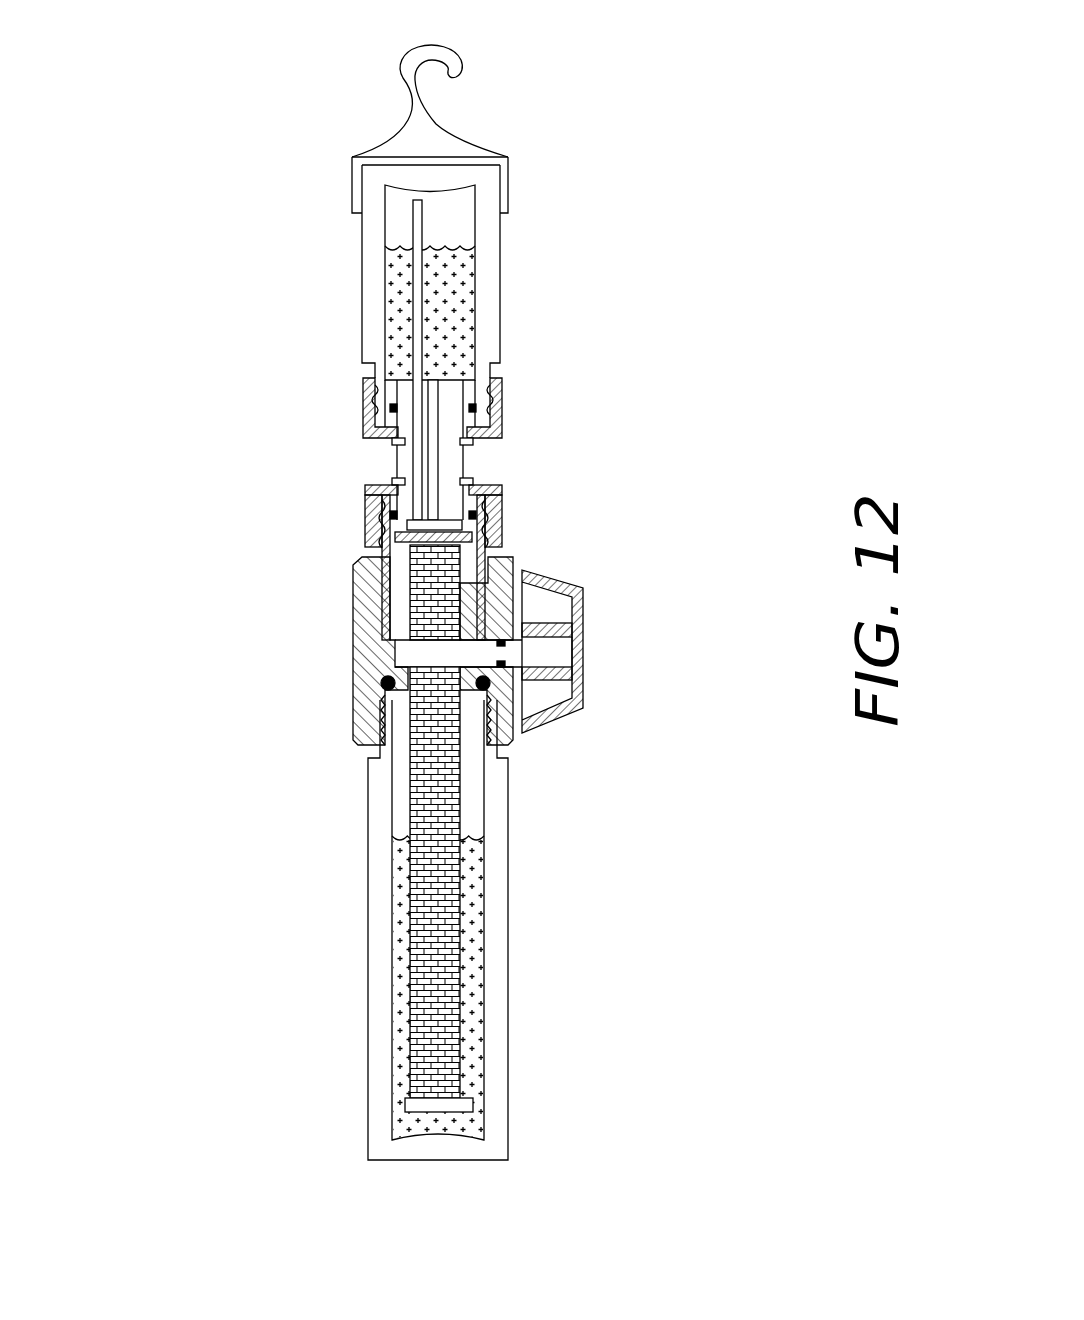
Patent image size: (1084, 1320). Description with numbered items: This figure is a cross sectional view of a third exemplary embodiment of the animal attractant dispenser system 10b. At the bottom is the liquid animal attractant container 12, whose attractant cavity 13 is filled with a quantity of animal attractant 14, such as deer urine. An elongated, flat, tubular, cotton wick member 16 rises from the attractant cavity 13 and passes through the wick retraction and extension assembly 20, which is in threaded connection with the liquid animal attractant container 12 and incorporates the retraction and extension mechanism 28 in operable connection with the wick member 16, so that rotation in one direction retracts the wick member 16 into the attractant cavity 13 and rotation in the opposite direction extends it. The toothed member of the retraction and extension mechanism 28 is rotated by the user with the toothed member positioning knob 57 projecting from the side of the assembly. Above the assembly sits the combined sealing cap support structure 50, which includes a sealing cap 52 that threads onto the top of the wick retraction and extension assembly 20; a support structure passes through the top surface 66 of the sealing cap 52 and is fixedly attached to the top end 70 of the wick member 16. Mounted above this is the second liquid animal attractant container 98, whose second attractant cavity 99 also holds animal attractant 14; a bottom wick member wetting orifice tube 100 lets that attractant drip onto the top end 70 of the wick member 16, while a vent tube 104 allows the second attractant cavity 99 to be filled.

The animal attractant dispenser system 10b is at (150, 606).
The liquid animal attractant container 12 is at (368, 895).
The attractant cavity 13 is at (397, 815).
The animal attractant 14 is at (460, 288).
The wick member 16 is at (412, 902).
The wick retraction and extension assembly 20 is at (322, 660).
The retraction and extension mechanism 28 is at (600, 667).
The combined sealing cap support structure 50 is at (330, 516).
The sealing cap 52 is at (500, 507).
The toothed member positioning knob 57 is at (548, 575).
The top surface 66 is at (375, 485).
The top end 70 is at (440, 567).
The second liquid animal attractant container 98 is at (362, 255).
The second attractant cavity 99 is at (447, 237).
The wick member wetting orifice tube 100 is at (438, 425).
The vent tube 104 is at (413, 232).